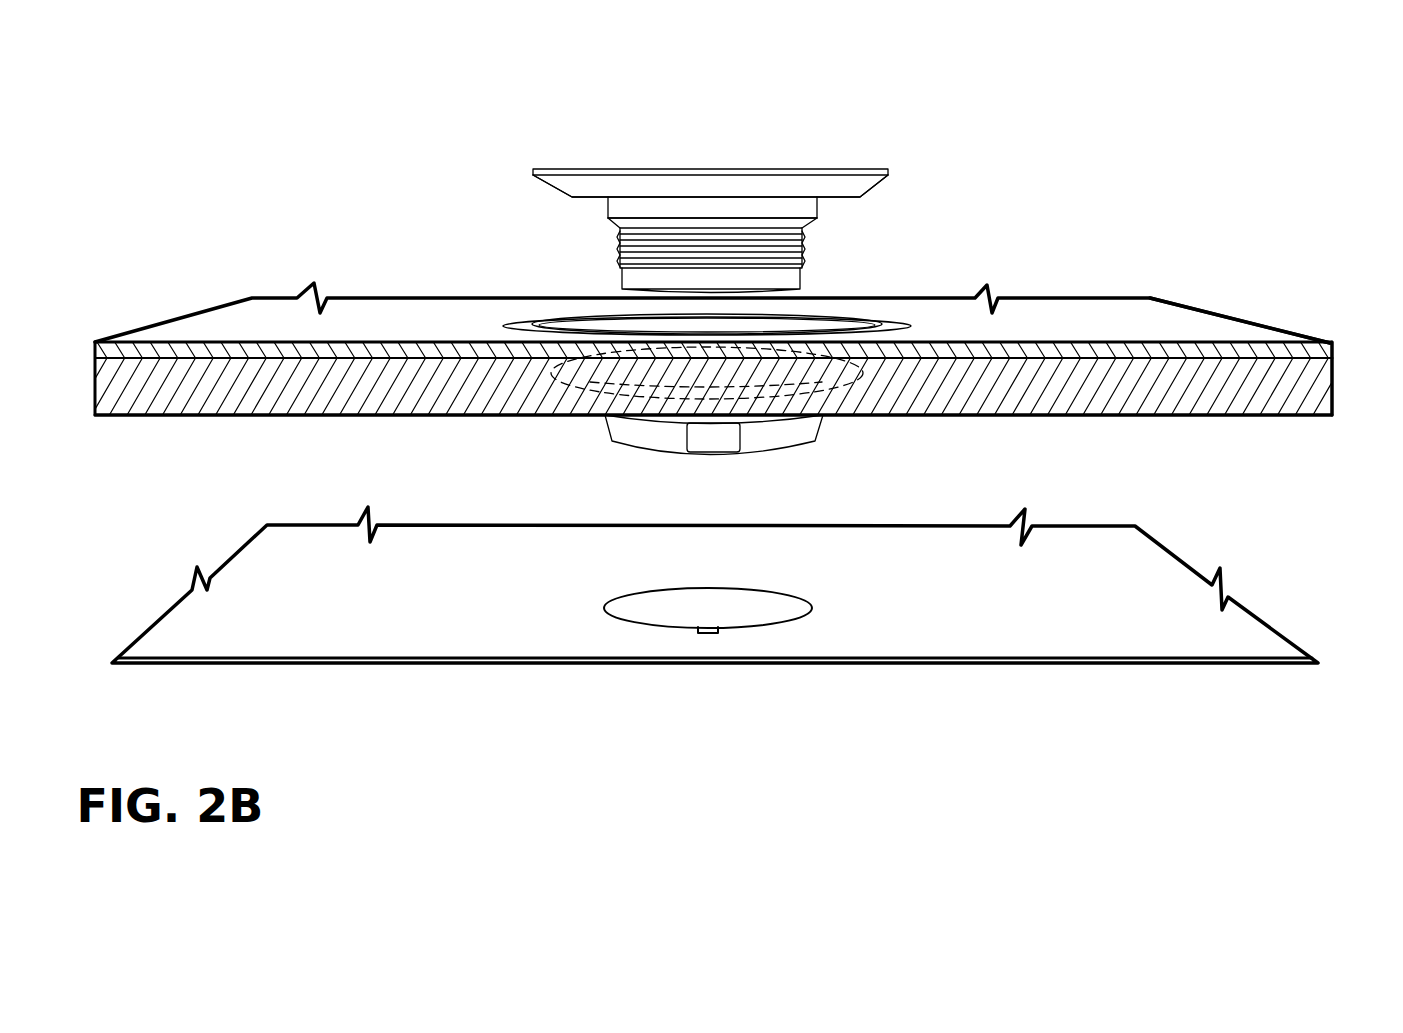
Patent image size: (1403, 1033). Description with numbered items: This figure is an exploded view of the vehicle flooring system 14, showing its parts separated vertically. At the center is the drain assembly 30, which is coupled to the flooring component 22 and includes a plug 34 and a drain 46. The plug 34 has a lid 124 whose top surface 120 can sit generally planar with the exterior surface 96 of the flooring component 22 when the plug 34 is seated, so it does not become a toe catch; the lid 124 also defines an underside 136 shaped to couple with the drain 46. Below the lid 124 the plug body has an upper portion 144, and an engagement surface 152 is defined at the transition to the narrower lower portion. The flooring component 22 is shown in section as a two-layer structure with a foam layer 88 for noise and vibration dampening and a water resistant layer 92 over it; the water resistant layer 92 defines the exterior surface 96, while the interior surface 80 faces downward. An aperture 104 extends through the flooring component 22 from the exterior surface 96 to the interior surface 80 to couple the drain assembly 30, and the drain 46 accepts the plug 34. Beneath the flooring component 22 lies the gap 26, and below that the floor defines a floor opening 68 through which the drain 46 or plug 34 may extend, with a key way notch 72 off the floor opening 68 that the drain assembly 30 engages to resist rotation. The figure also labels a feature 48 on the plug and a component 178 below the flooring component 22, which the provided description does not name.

The vehicle flooring system 14 is at (168, 275).
The flooring component 22 is at (90, 342).
The gap 26 is at (158, 607).
The drain assembly 30 is at (510, 200).
The plug 34 is at (897, 191).
The drain 46 is at (523, 325).
The threaded portion 48 is at (811, 272).
The floor opening 68 is at (770, 632).
The key way notch 72 is at (696, 634).
The interior surface 80 is at (1107, 417).
The foam layer 88 is at (1313, 383).
The water resistant layer 92 is at (1319, 352).
The exterior surface 96 is at (1183, 325).
The aperture 104 is at (912, 321).
The top surface 120 is at (820, 169).
The lid 124 is at (533, 173).
The underside 136 is at (572, 197).
The upper portion 144 is at (607, 205).
The engagement surface 152 is at (617, 219).
The locking nut 178 is at (757, 453).